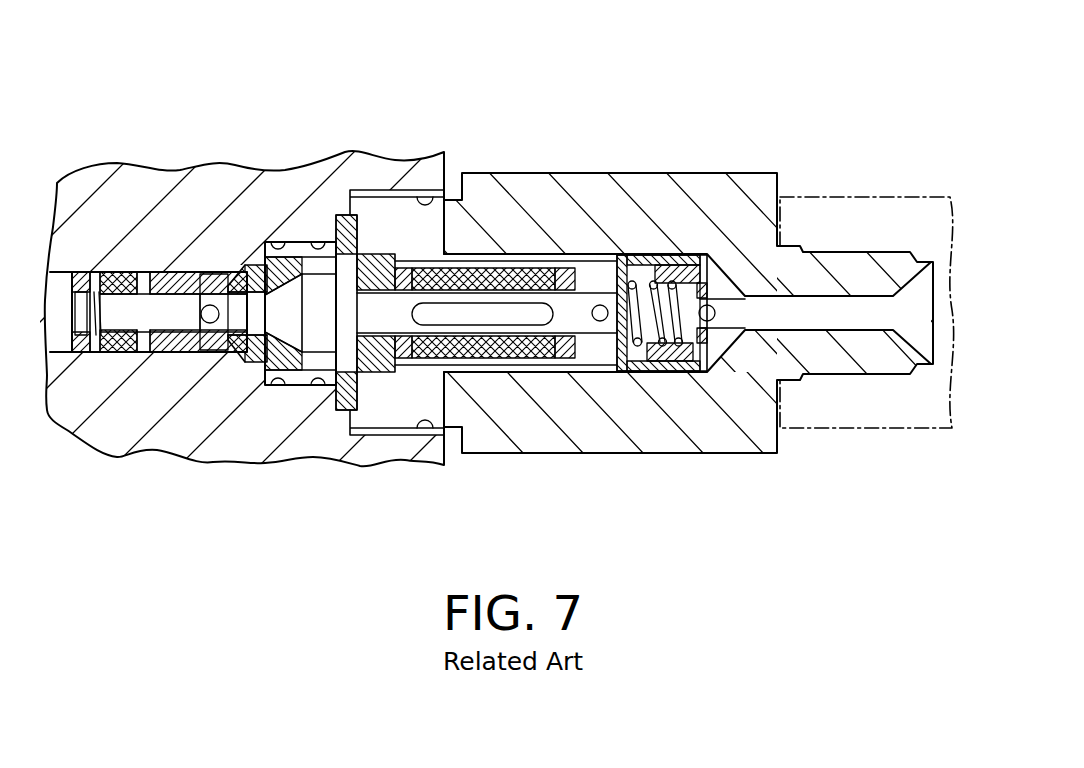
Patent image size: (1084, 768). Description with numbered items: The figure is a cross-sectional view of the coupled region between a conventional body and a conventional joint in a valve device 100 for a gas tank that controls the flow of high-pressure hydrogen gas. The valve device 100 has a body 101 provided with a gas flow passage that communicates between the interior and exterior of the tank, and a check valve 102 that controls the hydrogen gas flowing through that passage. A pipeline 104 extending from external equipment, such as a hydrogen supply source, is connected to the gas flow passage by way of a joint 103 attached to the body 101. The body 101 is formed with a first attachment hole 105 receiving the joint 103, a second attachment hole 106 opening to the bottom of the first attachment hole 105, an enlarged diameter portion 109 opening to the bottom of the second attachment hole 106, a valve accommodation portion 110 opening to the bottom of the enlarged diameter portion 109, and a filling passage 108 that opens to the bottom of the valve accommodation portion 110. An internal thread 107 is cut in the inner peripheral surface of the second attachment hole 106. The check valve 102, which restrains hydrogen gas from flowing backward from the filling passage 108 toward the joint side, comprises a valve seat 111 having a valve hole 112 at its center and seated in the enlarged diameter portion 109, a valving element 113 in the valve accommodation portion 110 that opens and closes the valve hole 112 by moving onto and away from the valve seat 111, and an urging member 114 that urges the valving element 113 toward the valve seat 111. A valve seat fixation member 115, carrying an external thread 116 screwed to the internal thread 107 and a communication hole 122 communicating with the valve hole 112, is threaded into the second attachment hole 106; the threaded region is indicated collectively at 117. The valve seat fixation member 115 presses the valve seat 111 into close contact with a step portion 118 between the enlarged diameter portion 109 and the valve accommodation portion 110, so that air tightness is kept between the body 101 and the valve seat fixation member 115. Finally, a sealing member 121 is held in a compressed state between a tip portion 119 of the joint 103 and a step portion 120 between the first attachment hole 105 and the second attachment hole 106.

The valve device 100 is at (882, 141).
The body 101 is at (208, 186).
The check valve 102 is at (150, 262).
The joint 103 is at (766, 173).
The pipeline 104 is at (855, 430).
The first attachment hole 105 is at (427, 190).
The second attachment hole 106 is at (327, 240).
The internal thread 107 is at (266, 240).
The filling passage 108 is at (78, 272).
The enlarged diameter portion 109 is at (245, 263).
The valve accommodation portion 110 is at (175, 354).
The valve seat 111 is at (272, 355).
The valve hole 112 is at (283, 390).
The valving element 113 is at (166, 352).
The urging member 114 is at (96, 352).
The valve seat fixation member 115 is at (322, 388).
The external thread 116 is at (300, 240).
The valve seat unit 117 is at (320, 72).
The step portion 118 is at (258, 388).
The tip portion 119 is at (383, 190).
The step portion 120 is at (357, 197).
The sealing member 121 is at (350, 437).
The communication hole 122 is at (445, 427).